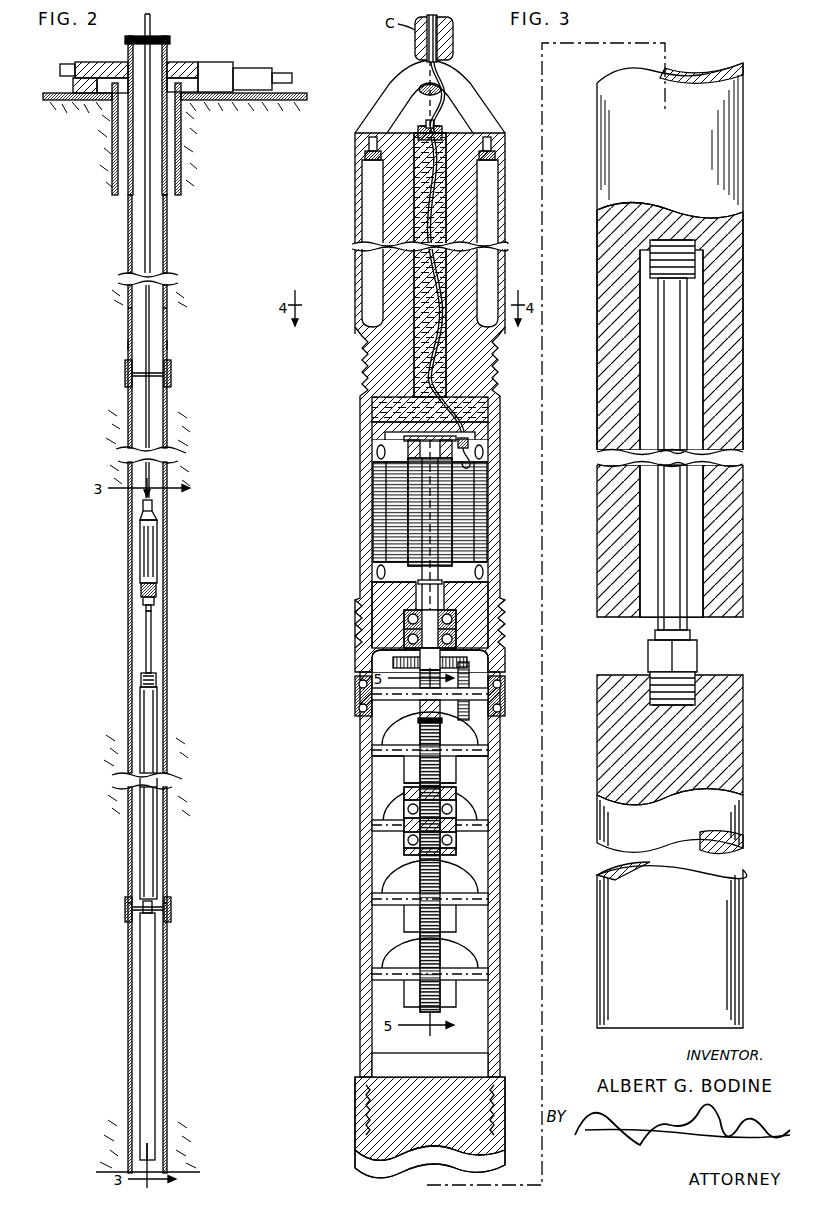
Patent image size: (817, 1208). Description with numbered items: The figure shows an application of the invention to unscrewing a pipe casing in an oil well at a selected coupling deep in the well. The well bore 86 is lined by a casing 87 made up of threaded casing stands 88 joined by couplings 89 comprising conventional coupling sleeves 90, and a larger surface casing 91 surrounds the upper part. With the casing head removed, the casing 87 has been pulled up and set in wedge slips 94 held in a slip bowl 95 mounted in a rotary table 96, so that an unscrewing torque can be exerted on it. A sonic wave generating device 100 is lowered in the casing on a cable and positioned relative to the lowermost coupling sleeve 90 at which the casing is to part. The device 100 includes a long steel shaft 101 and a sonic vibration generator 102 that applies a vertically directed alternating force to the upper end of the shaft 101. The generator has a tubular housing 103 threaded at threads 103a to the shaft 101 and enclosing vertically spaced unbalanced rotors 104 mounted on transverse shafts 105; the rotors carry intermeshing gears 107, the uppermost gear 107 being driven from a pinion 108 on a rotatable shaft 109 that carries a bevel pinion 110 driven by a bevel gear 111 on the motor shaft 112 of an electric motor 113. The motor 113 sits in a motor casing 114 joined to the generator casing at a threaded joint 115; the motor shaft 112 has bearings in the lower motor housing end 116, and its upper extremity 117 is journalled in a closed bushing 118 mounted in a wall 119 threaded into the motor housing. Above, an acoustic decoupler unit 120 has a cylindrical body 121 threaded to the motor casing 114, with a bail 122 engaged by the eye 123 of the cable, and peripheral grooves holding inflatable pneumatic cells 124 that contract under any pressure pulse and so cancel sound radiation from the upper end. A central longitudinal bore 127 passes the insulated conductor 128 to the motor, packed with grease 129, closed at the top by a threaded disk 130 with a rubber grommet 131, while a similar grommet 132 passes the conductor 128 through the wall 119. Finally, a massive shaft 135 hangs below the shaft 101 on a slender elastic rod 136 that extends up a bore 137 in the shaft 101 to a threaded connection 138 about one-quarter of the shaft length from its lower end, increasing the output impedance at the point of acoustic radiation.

In FIG. 2, the well bore 86 is at (166, 233).
In FIG. 2, the casing 87 is at (126, 346).
In FIG. 2, the casing stands 88 is at (168, 336).
In FIG. 2, the couplings 89 is at (172, 374).
In FIG. 2, the coupling sleeves 90 is at (167, 308).
In FIG. 2, the surface casing 91 is at (182, 139).
In FIG. 2, the wedge slips 94 is at (166, 63).
In FIG. 2, the slip bowl 95 is at (186, 70).
In FIG. 2, the rotary table 96 is at (222, 72).
In FIG. 2, the sonic wave generating device 100 is at (158, 718).
In FIG. 3, the sonic wave generating device 100 is at (360, 672).
In FIG. 2, the steel shaft 101 is at (128, 786).
In FIG. 2, the sonic vibration generator 102 is at (151, 639).
In FIG. 3, the sonic vibration generator 102 is at (358, 732).
In FIG. 3, the tubular housing 103 is at (360, 782).
In FIG. 3, the threads 103a is at (362, 1104).
In FIG. 3, the unbalanced rotors 104 is at (394, 882).
In FIG. 3, the transverse shafts 105 is at (490, 826).
In FIG. 3, the intermeshing gears 107 is at (422, 958).
In FIG. 3, the pinion 108 is at (422, 716).
In FIG. 3, the rotatable shaft 109 is at (418, 695).
In FIG. 3, the bevel pinion 110 is at (470, 678).
In FIG. 3, the bevel gear 111 is at (450, 657).
In FIG. 3, the motor shaft 112 is at (428, 592).
In FIG. 3, the electric motor 113 is at (400, 514).
In FIG. 3, the motor casing 114 is at (372, 489).
In FIG. 3, the threaded joint 115 is at (374, 634).
In FIG. 3, the lower motor housing end 116 is at (380, 612).
In FIG. 3, the upper extremity of motor shaft 117 is at (376, 467).
In FIG. 3, the bushing 118 is at (408, 446).
In FIG. 3, the wall 119 is at (380, 432).
In FIG. 2, the acoustic decoupler unit 120 is at (158, 562).
In FIG. 3, the acoustic decoupler unit 120 is at (356, 318).
In FIG. 3, the cylindrical body 121 is at (392, 267).
In FIG. 3, the bail 122 is at (396, 82).
In FIG. 3, the eye 123 is at (419, 92).
In FIG. 3, the pneumatic cells 124 is at (360, 210).
In FIG. 3, the central longitudinal bore 127 is at (425, 299).
In FIG. 3, the insulated conductor 128 is at (430, 222).
In FIG. 3, the grease 129 is at (410, 178).
In FIG. 3, the threaded disk 130 is at (445, 132).
In FIG. 3, the rubber grommet 131 is at (442, 126).
In FIG. 3, the grommet 132 is at (470, 444).
In FIG. 2, the shaft 135 is at (150, 1016).
In FIG. 3, the shaft 135 is at (736, 752).
In FIG. 3, the elastic rod 136 is at (676, 552).
In FIG. 3, the bore 137 is at (708, 460).
In FIG. 3, the threaded connection 138 is at (695, 258).